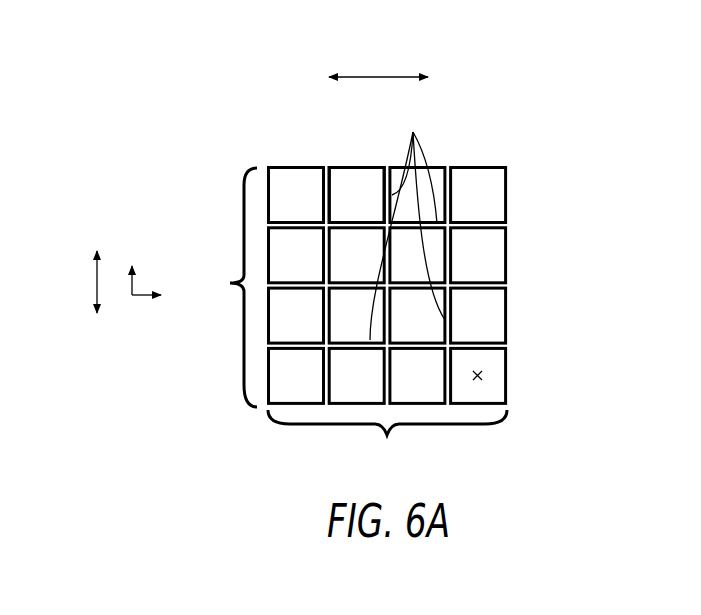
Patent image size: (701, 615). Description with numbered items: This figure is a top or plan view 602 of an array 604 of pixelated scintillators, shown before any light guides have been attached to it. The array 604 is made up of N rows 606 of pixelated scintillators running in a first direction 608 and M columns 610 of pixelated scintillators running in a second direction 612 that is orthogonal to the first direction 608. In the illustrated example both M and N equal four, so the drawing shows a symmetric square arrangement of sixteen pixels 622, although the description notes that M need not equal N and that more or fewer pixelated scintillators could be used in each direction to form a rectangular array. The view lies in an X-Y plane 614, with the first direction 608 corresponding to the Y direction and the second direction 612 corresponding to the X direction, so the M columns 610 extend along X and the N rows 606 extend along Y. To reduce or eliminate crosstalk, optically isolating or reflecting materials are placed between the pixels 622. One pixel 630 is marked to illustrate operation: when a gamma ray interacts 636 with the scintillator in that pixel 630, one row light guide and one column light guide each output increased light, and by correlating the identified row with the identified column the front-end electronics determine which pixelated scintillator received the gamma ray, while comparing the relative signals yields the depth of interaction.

The top view 602 is at (527, 132).
The array 604 is at (343, 166).
The N rows 606 is at (220, 270).
The first direction 608 is at (97, 282).
The M columns 610 is at (400, 455).
The second direction 612 is at (345, 77).
The X-Y plane 614 is at (147, 297).
The pixels 622 is at (407, 220).
The pixel 630 is at (493, 378).
The gamma ray interaction 636 is at (481, 381).